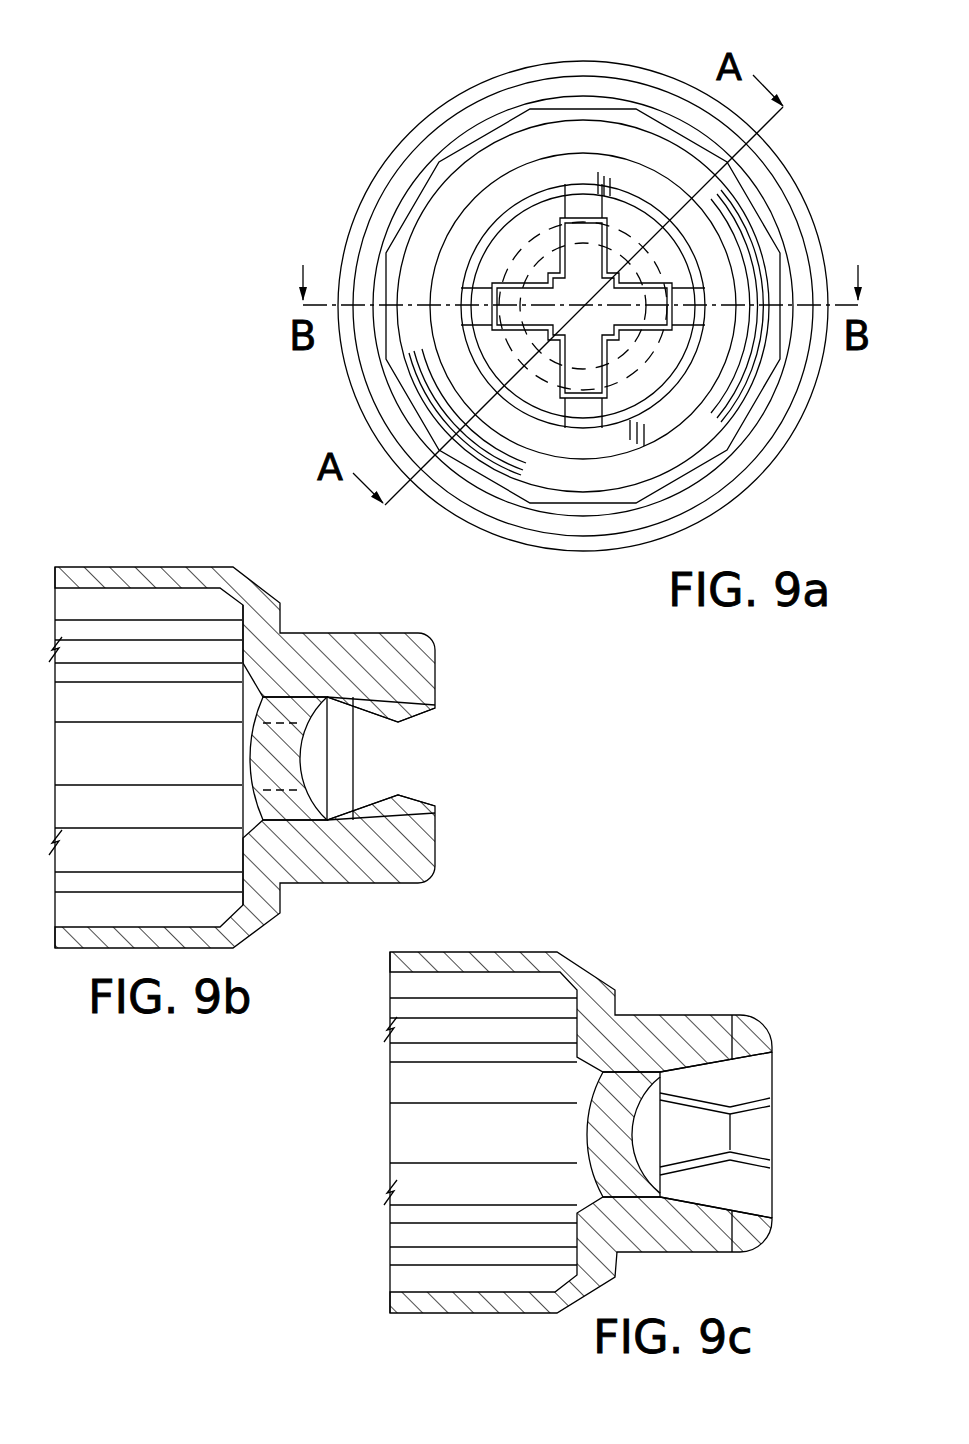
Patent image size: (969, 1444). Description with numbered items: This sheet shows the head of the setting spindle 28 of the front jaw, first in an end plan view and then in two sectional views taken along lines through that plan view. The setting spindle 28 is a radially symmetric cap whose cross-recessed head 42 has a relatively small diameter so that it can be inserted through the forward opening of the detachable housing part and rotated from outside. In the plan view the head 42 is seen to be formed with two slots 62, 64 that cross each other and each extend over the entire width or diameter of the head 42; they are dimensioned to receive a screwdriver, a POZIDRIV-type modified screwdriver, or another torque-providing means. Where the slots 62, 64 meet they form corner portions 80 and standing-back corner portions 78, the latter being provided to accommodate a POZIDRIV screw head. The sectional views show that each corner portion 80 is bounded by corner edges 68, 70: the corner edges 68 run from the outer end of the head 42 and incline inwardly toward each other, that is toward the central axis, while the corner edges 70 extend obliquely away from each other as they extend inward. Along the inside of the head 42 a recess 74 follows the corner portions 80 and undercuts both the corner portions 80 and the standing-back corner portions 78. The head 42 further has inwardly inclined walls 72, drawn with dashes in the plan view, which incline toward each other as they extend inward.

In FIG. 9A, the setting spindle 28 is at (398, 148).
In FIG. 9B, the setting spindle 28 is at (128, 565).
In FIG. 9C, the setting spindle 28 is at (557, 950).
In FIG. 9A, the cross-recessed head 42 is at (468, 258).
In FIG. 9B, the cross-recessed head 42 is at (435, 680).
In FIG. 9C, the cross-recessed head 42 is at (699, 1014).
In FIG. 9A, the slot 62 is at (578, 380).
In FIG. 9A, the slot 64 is at (688, 302).
In FIG. 9C, the slot 64 is at (753, 1040).
In FIG. 9A, the corner edge 68 is at (555, 335).
In FIG. 9B, the corner edge 68 is at (395, 800).
In FIG. 9C, the corner edge 68 is at (760, 1157).
In FIG. 9B, the corner edge 70 is at (353, 700).
In FIG. 9C, the corner edge 70 is at (683, 1160).
In FIG. 9A, the inwardly inclined wall 72 is at (657, 317).
In FIG. 9C, the inwardly inclined wall 72 is at (662, 1203).
In FIG. 9B, the recess 74 is at (317, 787).
In FIG. 9C, the recess 74 is at (647, 1160).
In FIG. 9A, the standing-back corner portion 78 is at (570, 332).
In FIG. 9B, the standing-back corner portion 78 is at (413, 727).
In FIG. 9C, the standing-back corner portion 78 is at (772, 1163).
In FIG. 9A, the corner portion 80 is at (607, 333).
In FIG. 9B, the corner portion 80 is at (432, 719).
In FIG. 9C, the corner portion 80 is at (768, 1103).